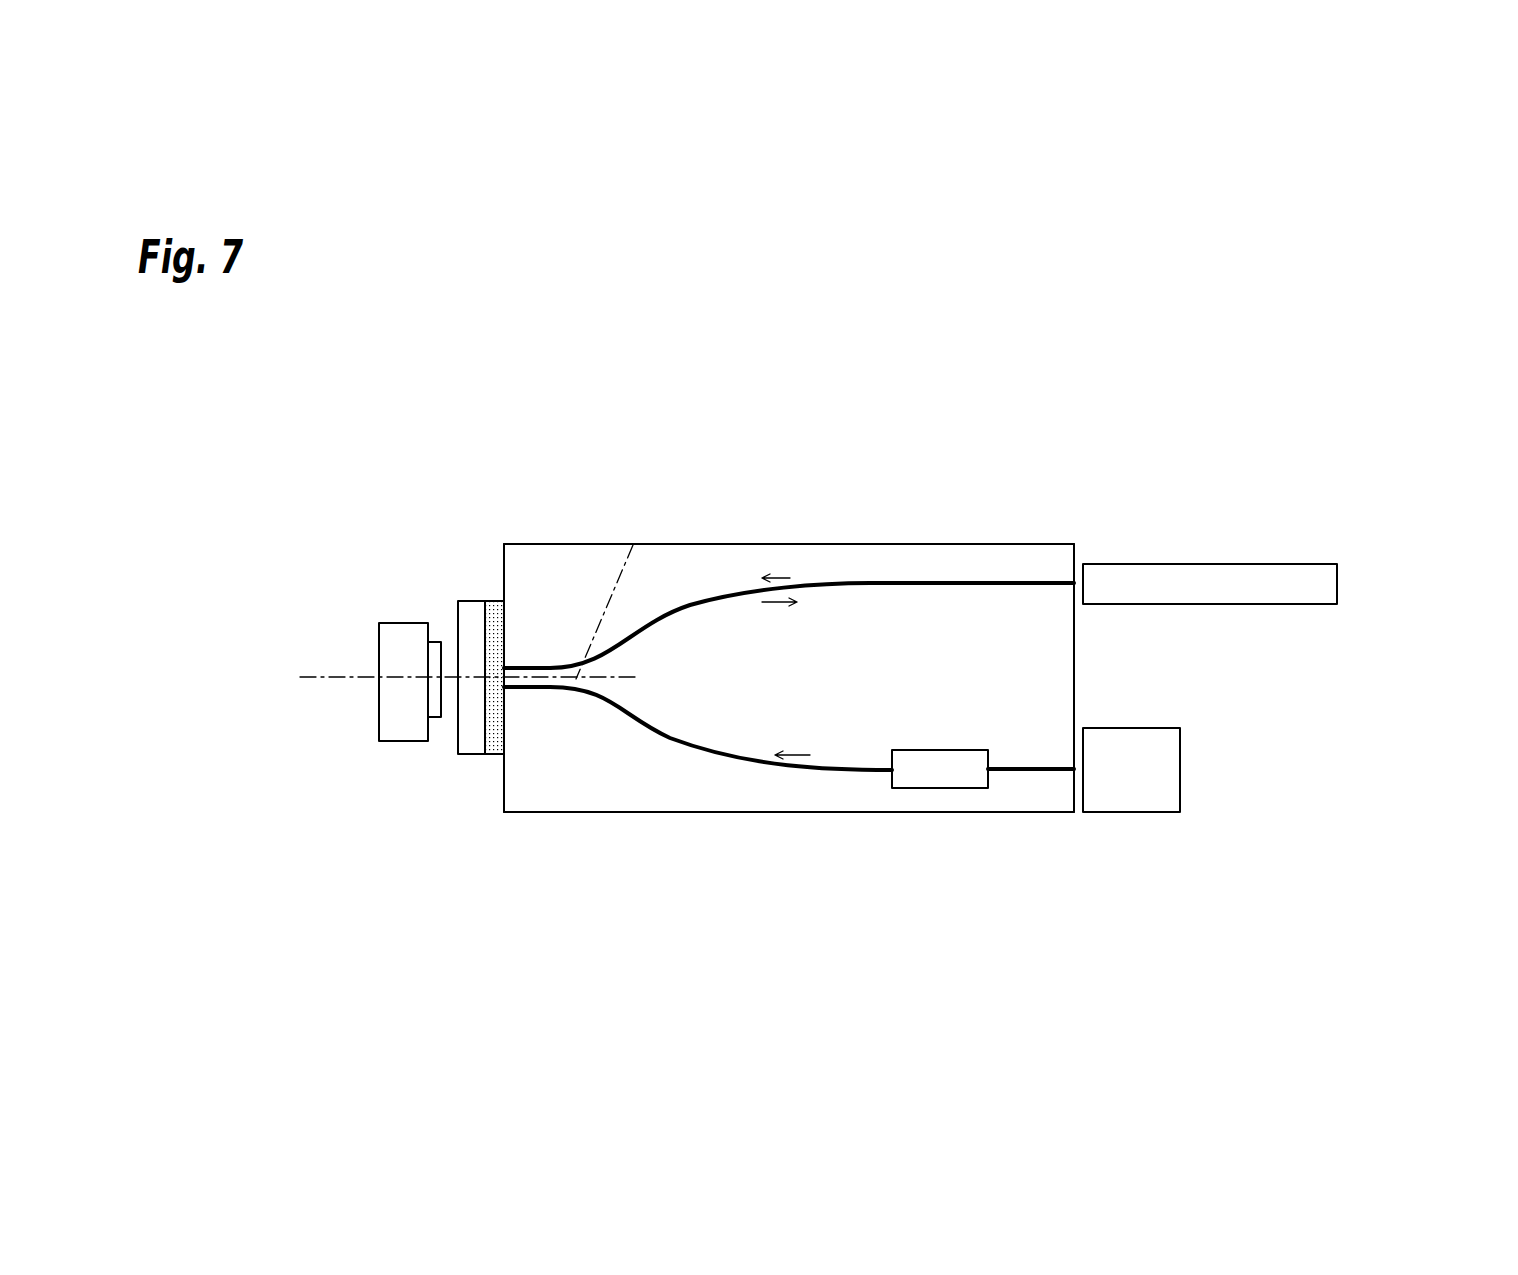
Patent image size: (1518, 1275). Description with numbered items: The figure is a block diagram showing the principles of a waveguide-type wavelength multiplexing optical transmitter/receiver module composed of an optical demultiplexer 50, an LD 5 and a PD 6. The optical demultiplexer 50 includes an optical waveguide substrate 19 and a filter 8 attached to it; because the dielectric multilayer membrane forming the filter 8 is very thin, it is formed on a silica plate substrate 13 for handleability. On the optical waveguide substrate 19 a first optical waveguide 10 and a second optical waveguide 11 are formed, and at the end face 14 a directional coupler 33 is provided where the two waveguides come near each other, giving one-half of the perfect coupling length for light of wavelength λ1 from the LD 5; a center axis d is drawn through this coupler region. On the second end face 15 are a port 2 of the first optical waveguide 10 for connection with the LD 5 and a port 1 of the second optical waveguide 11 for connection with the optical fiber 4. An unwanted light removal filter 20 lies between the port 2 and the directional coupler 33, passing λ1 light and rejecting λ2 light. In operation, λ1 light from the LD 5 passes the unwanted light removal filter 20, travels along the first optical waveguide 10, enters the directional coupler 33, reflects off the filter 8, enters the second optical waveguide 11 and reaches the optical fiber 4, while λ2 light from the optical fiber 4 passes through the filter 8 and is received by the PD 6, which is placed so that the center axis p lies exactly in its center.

The port 1 is at (1032, 580).
The port 2 is at (1038, 771).
The optical fiber 4 is at (1262, 564).
The LD 5 is at (1180, 785).
The PD 6 is at (402, 741).
The filter 8 is at (487, 600).
The first optical waveguide 10 is at (822, 770).
The second optical waveguide 11 is at (897, 583).
The silica plate substrate 13 is at (470, 600).
The end face 14 is at (504, 730).
The second end face 15 is at (1074, 686).
The optical waveguide substrate 19 is at (650, 812).
The unwanted light removal filter 20 is at (947, 788).
The directional coupler 33 is at (522, 667).
The optical demultiplexer 50 is at (733, 815).
The center axis d is at (634, 545).
The center axis p is at (322, 698).